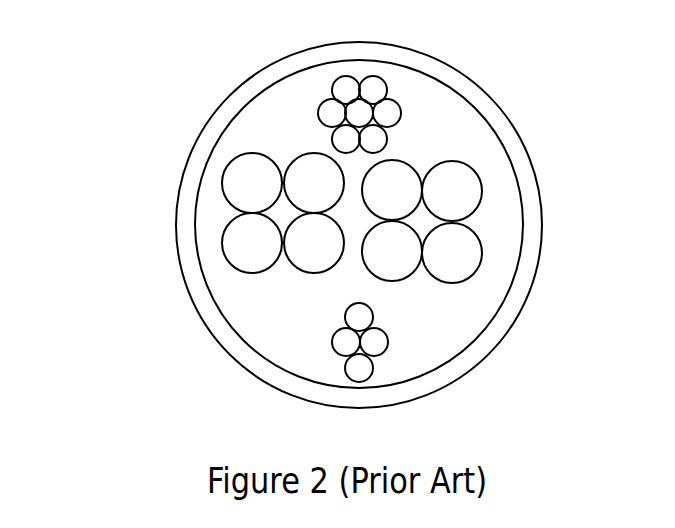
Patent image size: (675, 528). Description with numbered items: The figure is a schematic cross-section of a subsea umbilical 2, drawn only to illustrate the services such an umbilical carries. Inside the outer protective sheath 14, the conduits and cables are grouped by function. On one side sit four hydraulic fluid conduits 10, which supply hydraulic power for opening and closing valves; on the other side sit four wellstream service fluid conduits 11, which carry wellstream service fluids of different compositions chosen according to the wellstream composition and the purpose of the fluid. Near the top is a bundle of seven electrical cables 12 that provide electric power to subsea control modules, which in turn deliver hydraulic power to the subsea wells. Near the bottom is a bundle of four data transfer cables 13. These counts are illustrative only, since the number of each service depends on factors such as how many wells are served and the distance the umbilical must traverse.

The umbilical 2 is at (156, 112).
The hydraulic fluid conduits 10 is at (223, 248).
The wellstream service fluid conduits 11 is at (483, 190).
The electrical cables 12 is at (400, 101).
The data transfer cables 13 is at (372, 340).
The protective sheath 14 is at (512, 142).